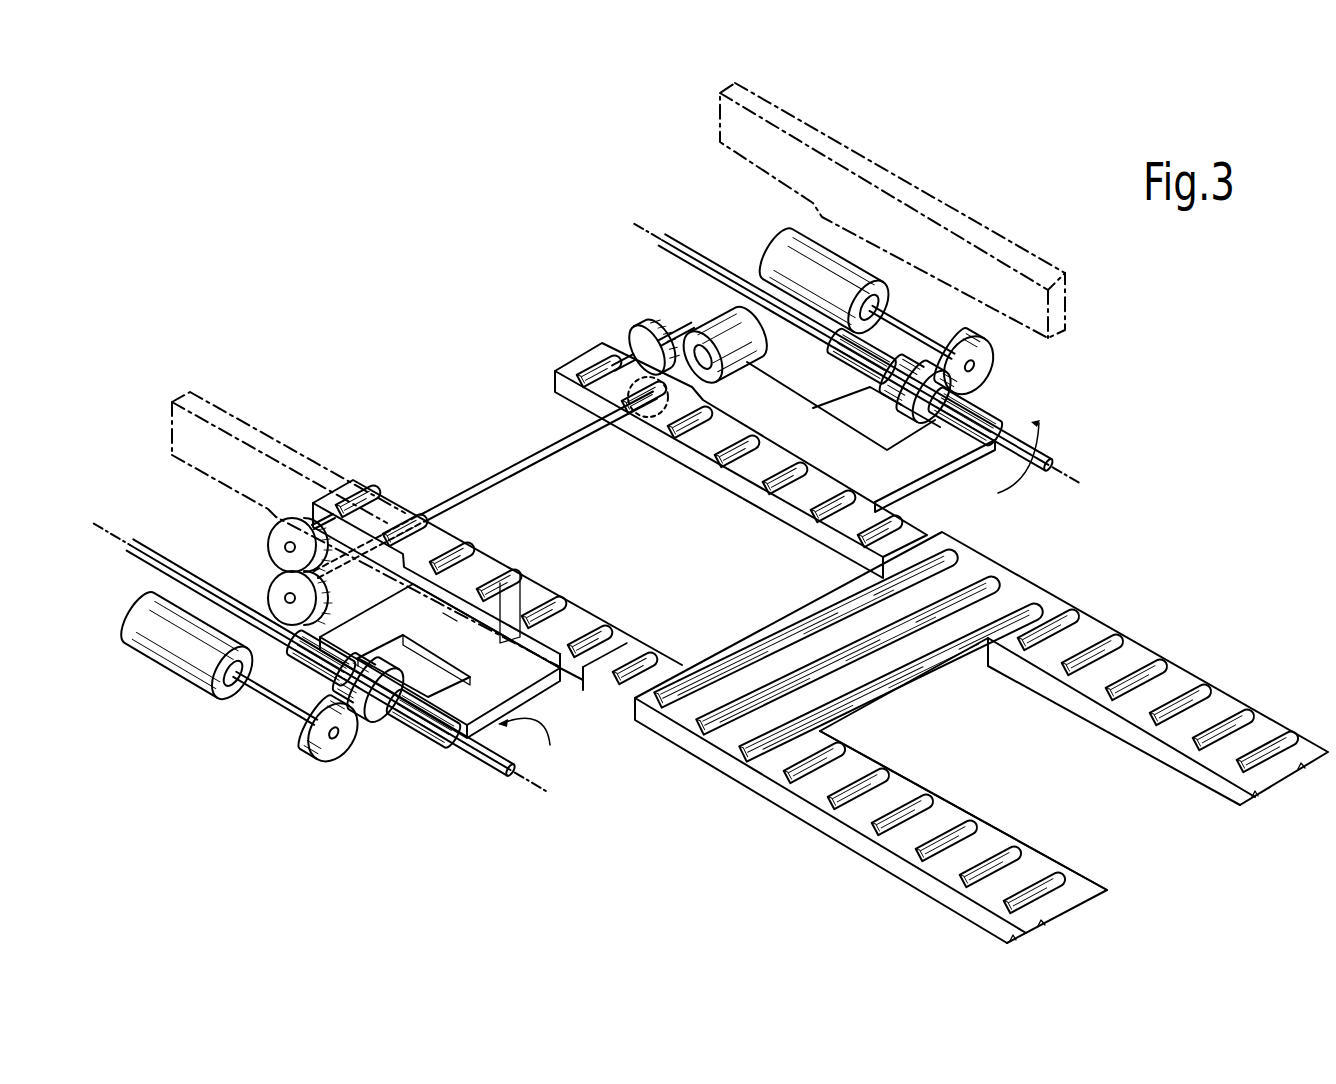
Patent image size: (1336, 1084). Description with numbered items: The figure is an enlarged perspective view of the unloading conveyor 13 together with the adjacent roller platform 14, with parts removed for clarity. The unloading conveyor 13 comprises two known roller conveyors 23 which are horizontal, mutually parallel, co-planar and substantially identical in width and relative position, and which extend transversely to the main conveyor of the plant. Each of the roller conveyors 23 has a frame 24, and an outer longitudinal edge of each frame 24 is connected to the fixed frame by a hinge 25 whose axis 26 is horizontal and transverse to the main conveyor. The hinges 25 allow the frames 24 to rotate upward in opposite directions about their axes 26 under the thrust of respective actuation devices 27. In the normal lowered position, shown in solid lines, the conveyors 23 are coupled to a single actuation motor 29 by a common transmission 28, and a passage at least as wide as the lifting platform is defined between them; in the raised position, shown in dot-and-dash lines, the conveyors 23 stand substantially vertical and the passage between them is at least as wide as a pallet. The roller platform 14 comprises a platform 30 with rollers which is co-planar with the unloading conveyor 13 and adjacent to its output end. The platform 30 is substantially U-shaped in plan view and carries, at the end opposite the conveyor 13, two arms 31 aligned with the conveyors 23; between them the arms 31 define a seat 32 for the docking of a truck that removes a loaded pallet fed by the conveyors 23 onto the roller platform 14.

The unloading conveyor 13 is at (573, 697).
The roller platform 14 is at (1068, 595).
The roller conveyors 23 is at (1018, 237).
The frames 24 is at (885, 497).
The hinge 25 is at (992, 402).
The axis 26 is at (1078, 481).
The actuation devices 27 is at (924, 320).
The common transmission 28 is at (513, 470).
The actuation motor 29 is at (722, 320).
The platform with rollers 30 is at (984, 598).
The arms 31 is at (1207, 714).
The seat 32 is at (987, 826).